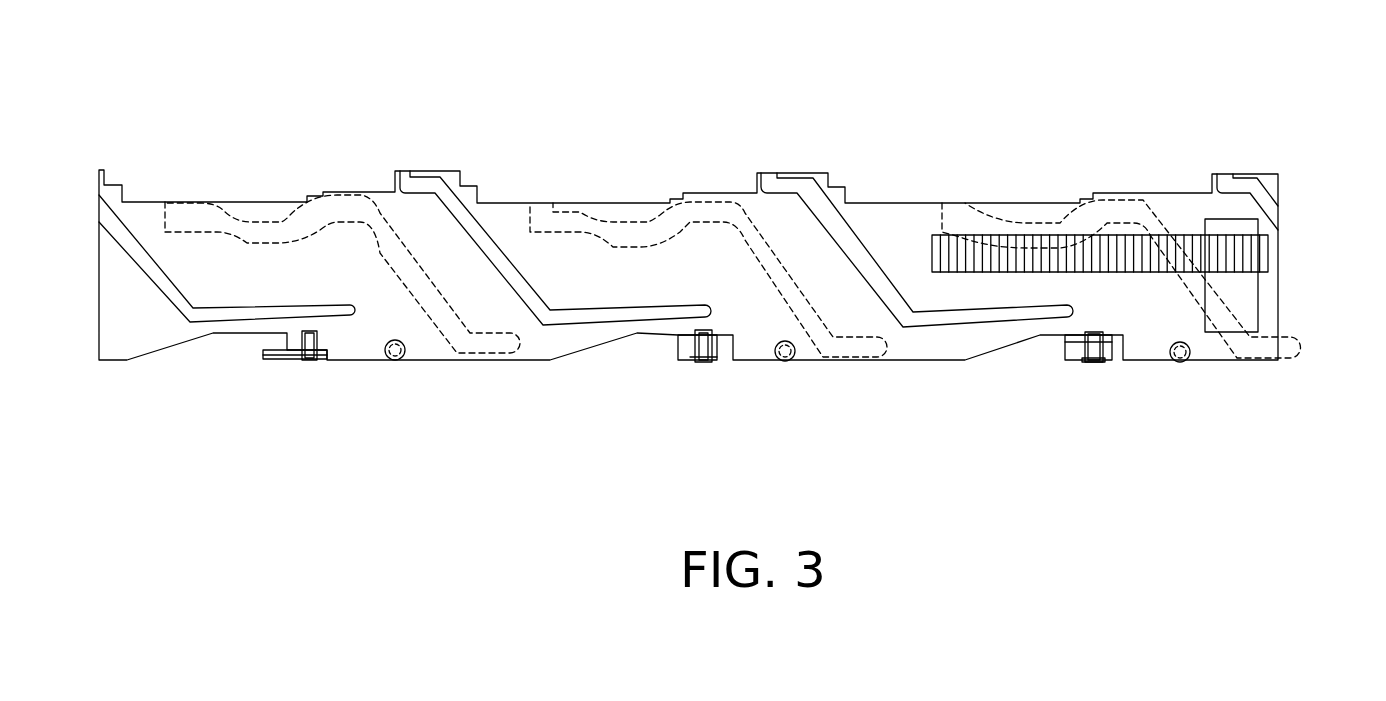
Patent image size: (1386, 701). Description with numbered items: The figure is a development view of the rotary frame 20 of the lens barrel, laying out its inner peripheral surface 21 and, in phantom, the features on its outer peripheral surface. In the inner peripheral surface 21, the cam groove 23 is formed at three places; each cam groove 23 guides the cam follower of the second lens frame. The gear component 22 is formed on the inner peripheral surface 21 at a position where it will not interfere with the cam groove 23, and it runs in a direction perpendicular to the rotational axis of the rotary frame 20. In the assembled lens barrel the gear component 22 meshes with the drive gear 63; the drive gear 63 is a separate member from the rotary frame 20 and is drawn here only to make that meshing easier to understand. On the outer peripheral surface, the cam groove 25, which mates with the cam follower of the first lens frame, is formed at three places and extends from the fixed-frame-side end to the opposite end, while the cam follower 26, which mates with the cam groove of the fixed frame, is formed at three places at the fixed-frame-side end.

The rotary frame 20 is at (283, 113).
The inner peripheral surface 21 is at (885, 225).
The gear component 22 is at (1263, 257).
The cam groove 23 is at (443, 193).
The cam groove 25 is at (283, 220).
The cam follower 26 is at (403, 357).
The drive gear 63 is at (1253, 295).